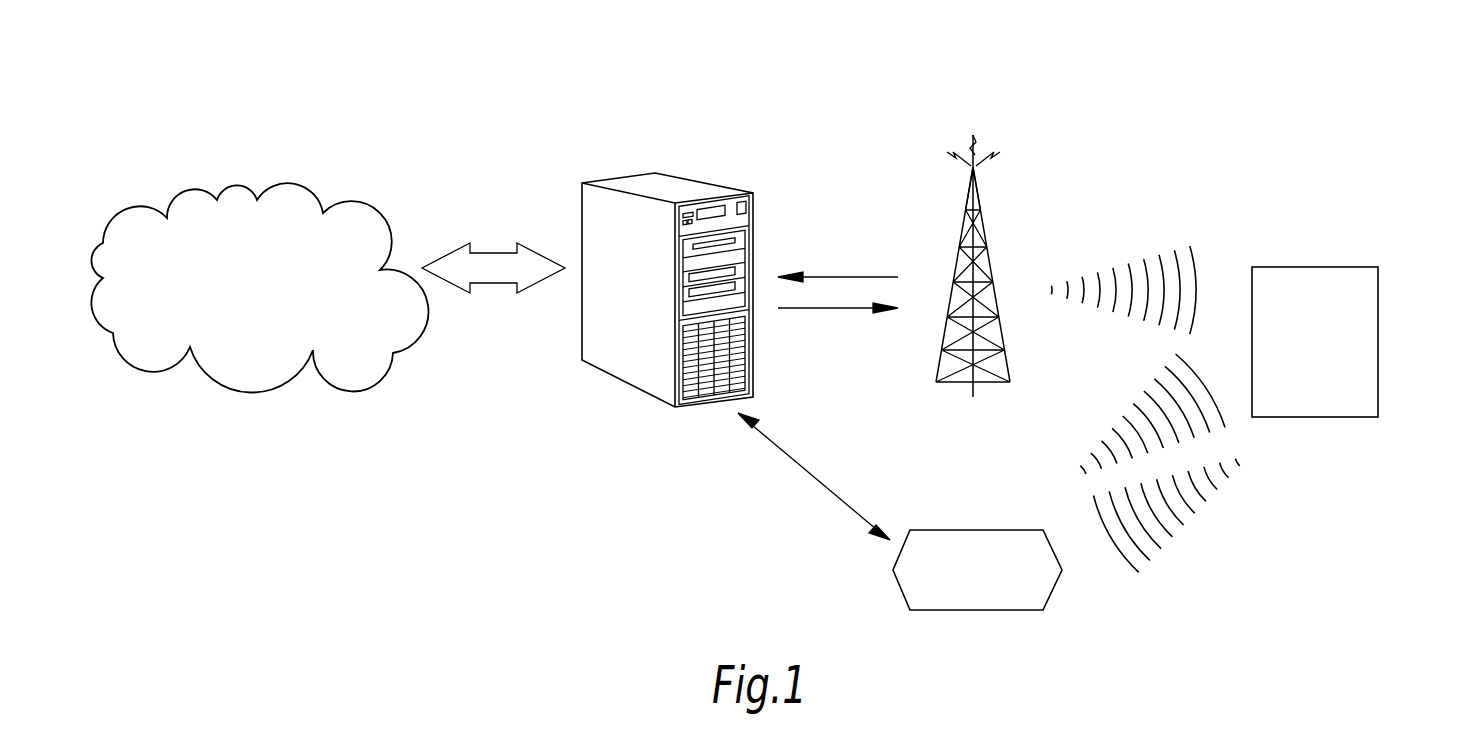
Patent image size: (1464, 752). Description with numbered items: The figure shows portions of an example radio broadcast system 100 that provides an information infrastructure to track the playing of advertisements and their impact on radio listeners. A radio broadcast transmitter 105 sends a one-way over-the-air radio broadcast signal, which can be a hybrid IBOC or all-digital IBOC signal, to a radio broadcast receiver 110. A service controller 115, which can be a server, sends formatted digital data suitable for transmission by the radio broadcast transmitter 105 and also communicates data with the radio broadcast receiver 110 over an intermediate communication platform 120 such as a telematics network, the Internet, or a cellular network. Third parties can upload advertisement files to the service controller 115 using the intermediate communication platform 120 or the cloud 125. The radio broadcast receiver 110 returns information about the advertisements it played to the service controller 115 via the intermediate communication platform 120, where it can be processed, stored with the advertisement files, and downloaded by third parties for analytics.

The system 100 is at (1360, 73).
The radio broadcast transmitter 105 is at (960, 237).
The radio broadcast receiver 110 is at (1317, 267).
The service controller 115 is at (703, 183).
The intermediate communication platform 120 is at (977, 530).
The cloud 125 is at (373, 205).